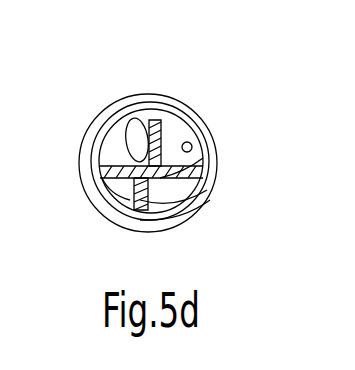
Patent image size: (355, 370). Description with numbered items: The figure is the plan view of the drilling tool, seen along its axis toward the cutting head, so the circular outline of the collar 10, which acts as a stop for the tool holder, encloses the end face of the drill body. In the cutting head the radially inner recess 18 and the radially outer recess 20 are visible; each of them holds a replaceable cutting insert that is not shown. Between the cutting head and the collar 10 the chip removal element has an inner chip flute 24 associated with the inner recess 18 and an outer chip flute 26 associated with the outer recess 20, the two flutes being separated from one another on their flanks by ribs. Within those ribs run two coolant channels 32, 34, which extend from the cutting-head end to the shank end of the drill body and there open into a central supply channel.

The collar 10 is at (217, 171).
The radially inner recess 18 is at (162, 138).
The radially outer recess 20 is at (139, 205).
The inner chip flute 24 is at (157, 122).
The outer chip flute 26 is at (178, 199).
The coolant channel 32 is at (92, 195).
The coolant channel 34 is at (187, 146).